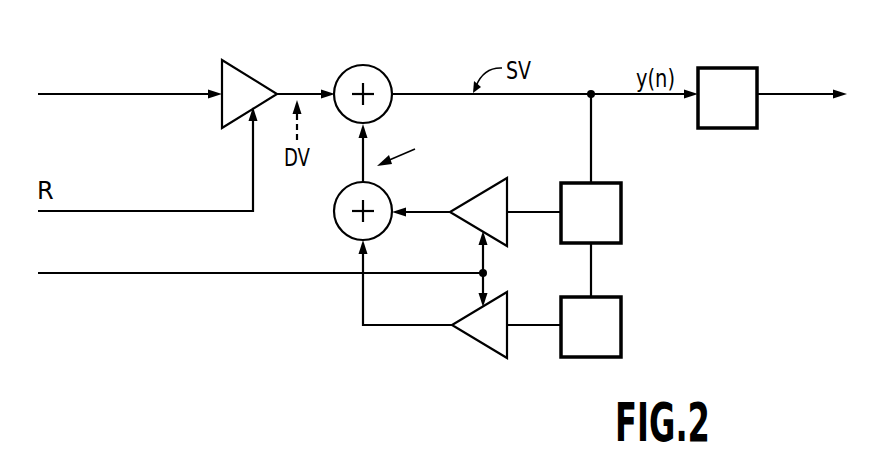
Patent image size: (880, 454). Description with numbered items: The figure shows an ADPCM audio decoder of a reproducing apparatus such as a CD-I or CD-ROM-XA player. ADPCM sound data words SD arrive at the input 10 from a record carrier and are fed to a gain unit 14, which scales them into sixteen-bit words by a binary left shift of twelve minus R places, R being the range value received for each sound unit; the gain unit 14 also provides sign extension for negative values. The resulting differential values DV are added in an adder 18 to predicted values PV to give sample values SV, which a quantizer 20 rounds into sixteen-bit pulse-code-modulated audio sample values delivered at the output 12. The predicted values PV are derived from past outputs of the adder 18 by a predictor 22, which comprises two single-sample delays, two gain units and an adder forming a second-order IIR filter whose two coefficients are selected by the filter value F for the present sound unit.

The input 10 is at (92, 97).
The output 12 is at (793, 91).
The gain unit 14 is at (258, 81).
The adder 18 is at (386, 70).
The quantizer 20 is at (727, 66).
The predictor 22 is at (550, 277).